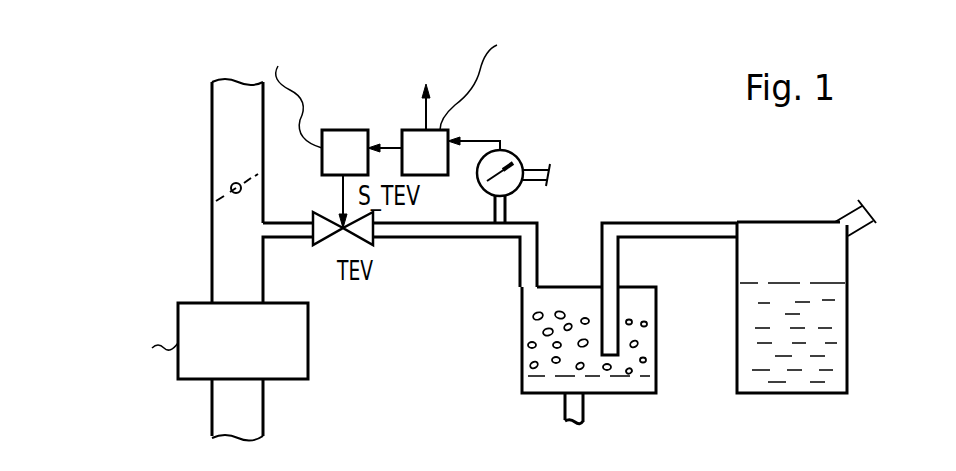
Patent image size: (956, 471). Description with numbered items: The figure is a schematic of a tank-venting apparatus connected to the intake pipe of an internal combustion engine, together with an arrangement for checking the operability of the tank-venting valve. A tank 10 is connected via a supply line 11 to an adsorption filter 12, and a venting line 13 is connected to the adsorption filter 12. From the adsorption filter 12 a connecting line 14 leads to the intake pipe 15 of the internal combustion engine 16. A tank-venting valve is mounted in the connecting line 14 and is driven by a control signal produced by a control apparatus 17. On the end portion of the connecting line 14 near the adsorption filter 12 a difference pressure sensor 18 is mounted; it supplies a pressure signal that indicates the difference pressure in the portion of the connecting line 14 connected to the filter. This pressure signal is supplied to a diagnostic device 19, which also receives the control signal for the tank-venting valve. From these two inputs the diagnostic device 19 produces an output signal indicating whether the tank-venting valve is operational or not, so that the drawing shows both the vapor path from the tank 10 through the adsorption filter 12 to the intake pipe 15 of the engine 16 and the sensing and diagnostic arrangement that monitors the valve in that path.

The tank 10 is at (838, 350).
The supply line 11 is at (678, 230).
The adsorption filter 12 is at (648, 340).
The venting line 13 is at (578, 405).
The connecting line 14 is at (298, 238).
The intake pipe 15 is at (222, 268).
The internal combustion engine 16 is at (300, 343).
The control apparatus 17 is at (350, 140).
The difference pressure sensor 18 is at (513, 186).
The diagnostic device 19 is at (413, 140).